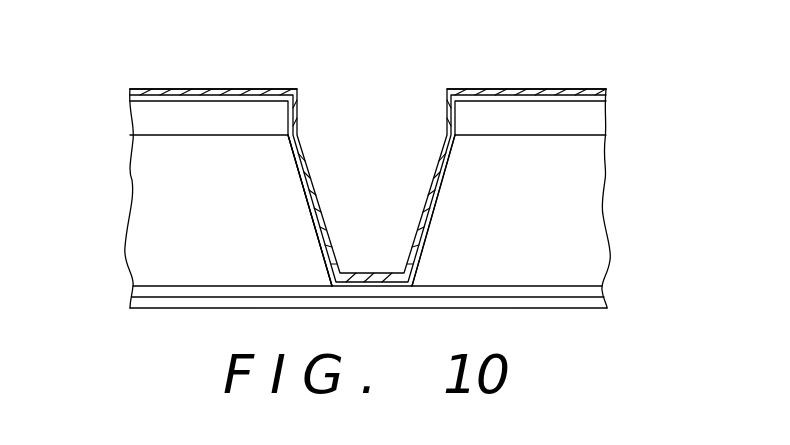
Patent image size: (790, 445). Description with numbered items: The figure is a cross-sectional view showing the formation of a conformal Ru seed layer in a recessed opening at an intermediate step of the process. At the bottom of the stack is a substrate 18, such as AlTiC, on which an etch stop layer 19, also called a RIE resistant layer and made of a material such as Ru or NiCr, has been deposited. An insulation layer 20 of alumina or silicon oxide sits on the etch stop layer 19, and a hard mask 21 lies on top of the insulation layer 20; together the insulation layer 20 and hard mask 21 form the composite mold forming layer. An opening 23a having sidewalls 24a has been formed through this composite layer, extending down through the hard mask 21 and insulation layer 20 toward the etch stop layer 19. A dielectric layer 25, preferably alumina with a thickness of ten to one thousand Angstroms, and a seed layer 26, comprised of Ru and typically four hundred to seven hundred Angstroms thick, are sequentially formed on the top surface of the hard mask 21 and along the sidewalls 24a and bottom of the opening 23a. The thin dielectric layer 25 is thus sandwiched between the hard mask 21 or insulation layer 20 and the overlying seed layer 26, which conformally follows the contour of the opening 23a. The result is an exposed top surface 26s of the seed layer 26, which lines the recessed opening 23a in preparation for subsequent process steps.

The substrate 18 is at (132, 308).
The etch stop layer 19 is at (592, 287).
The insulation layer 20 is at (590, 217).
The hard mask 21 is at (141, 121).
The opening 23a is at (344, 120).
The sidewalls 24a is at (333, 240).
The dielectric layer 25 is at (605, 97).
The seed layer 26 is at (593, 90).
The top surface of the seed layer 26s is at (157, 90).